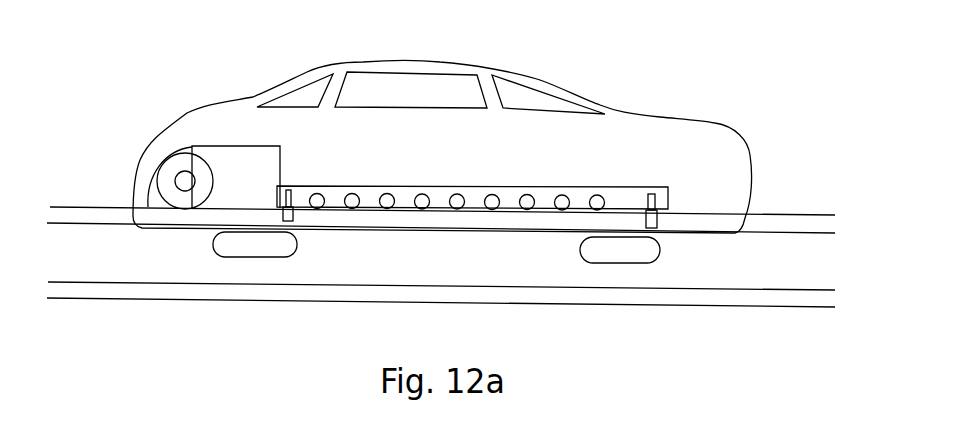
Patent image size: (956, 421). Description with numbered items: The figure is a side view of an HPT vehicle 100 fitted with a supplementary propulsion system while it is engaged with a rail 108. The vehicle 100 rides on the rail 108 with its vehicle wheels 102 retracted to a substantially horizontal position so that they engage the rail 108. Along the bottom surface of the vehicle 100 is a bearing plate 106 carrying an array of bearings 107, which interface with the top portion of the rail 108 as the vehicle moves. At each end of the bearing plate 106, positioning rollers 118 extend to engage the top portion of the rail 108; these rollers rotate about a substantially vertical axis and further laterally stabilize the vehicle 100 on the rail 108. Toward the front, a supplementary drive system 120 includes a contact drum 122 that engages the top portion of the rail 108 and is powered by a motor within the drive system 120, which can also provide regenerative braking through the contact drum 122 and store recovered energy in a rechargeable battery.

The HPT vehicle 100 is at (307, 71).
The vehicle wheels 102 is at (215, 242).
The bearing plate 106 is at (618, 197).
The bearings 107 is at (457, 201).
The rail 108 is at (125, 273).
The positioning rollers 118 is at (295, 218).
The supplementary drive system 120 is at (280, 157).
The contact drum 122 is at (188, 165).